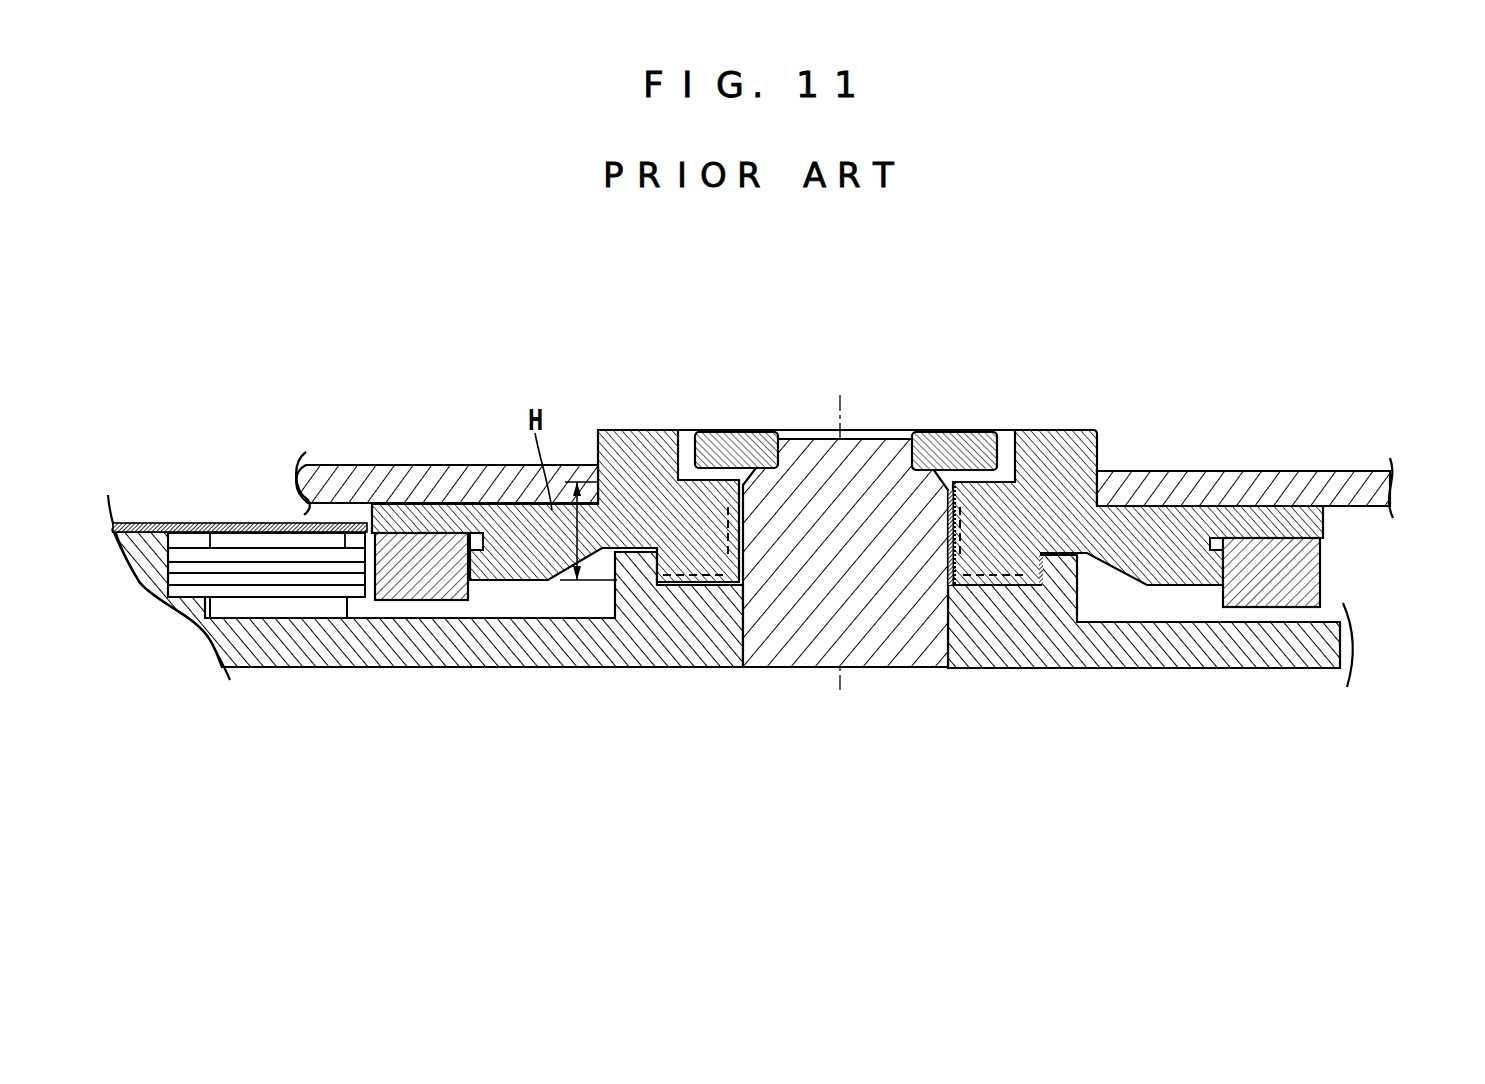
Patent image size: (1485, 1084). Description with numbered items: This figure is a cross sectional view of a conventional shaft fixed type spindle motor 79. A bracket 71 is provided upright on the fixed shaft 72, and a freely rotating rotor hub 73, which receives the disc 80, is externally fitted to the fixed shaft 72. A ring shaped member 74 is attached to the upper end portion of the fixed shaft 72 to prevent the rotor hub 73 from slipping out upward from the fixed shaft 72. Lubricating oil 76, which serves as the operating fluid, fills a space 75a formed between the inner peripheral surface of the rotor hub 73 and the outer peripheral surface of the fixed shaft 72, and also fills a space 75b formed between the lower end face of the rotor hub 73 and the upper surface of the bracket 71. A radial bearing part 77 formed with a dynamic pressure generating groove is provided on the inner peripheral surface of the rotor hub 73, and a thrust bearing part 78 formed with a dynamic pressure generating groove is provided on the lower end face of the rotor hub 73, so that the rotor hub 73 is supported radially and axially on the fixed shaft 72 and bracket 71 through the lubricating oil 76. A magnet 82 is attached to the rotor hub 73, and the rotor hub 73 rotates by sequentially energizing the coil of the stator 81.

The bracket 71 is at (515, 635).
The fixed shaft 72 is at (773, 640).
The rotor hub 73 is at (1043, 430).
The ring shaped member 74 is at (725, 427).
The space 75a is at (947, 545).
The space 75b is at (1005, 545).
The lubricating oil 76 is at (1040, 545).
The radial bearing part 77 is at (972, 480).
The thrust bearing part 78 is at (1005, 540).
The spindle motor 79 is at (463, 417).
The disc 80 is at (1257, 483).
The stator 81 is at (295, 578).
The magnet 82 is at (1293, 567).